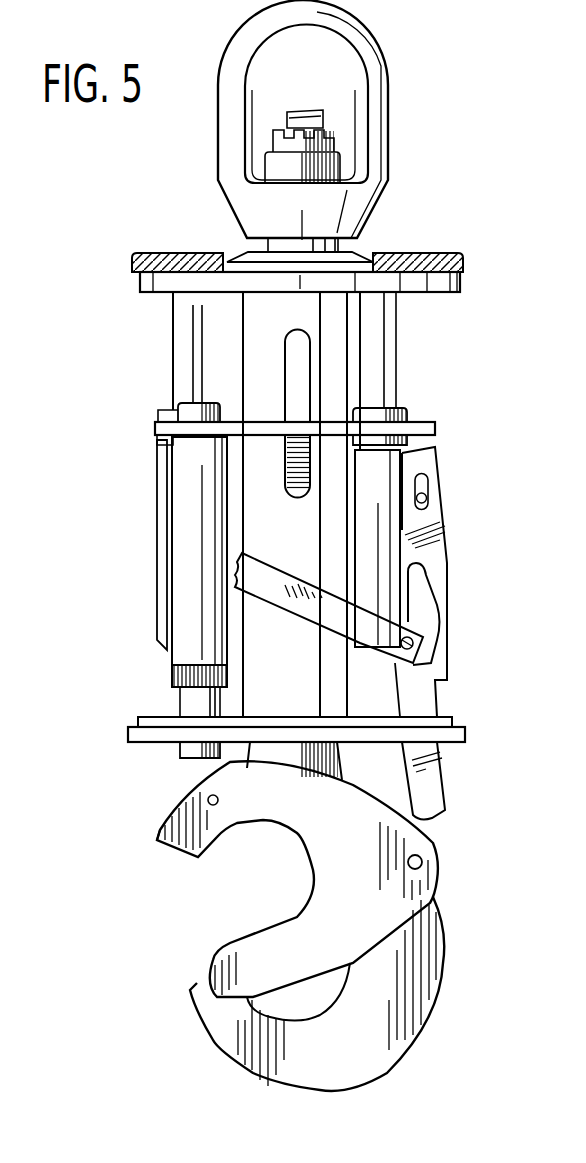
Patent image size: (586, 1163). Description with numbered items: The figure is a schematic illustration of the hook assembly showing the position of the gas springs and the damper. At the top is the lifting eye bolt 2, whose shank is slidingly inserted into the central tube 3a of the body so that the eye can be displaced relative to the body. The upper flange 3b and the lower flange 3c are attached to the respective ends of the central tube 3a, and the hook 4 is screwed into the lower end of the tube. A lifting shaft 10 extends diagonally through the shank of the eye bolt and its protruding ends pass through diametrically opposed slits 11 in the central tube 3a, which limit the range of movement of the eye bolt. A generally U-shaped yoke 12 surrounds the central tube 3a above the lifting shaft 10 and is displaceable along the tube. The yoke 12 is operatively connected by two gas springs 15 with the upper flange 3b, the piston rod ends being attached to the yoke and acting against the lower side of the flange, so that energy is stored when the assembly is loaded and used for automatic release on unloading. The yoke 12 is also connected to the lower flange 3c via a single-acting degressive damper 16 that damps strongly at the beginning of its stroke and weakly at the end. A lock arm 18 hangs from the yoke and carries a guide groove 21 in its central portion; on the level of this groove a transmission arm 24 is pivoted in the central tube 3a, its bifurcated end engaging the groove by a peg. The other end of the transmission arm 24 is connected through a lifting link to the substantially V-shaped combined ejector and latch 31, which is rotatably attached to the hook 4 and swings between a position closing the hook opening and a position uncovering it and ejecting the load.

The lifting eye bolt 2 is at (235, 167).
The central tube 3a is at (268, 350).
The upper flange 3b is at (168, 281).
The lower flange 3c is at (187, 733).
The lifting shaft 10 is at (293, 455).
The slits 11 is at (302, 378).
The yoke 12 is at (431, 428).
The gas springs 15 is at (165, 487).
The damper 16 is at (207, 540).
The lock arm 18 is at (432, 675).
The guide groove 21 is at (436, 613).
The transmission arm 24 is at (270, 589).
The combined ejector and latch 31 is at (373, 838).
The hook 4 is at (393, 966).